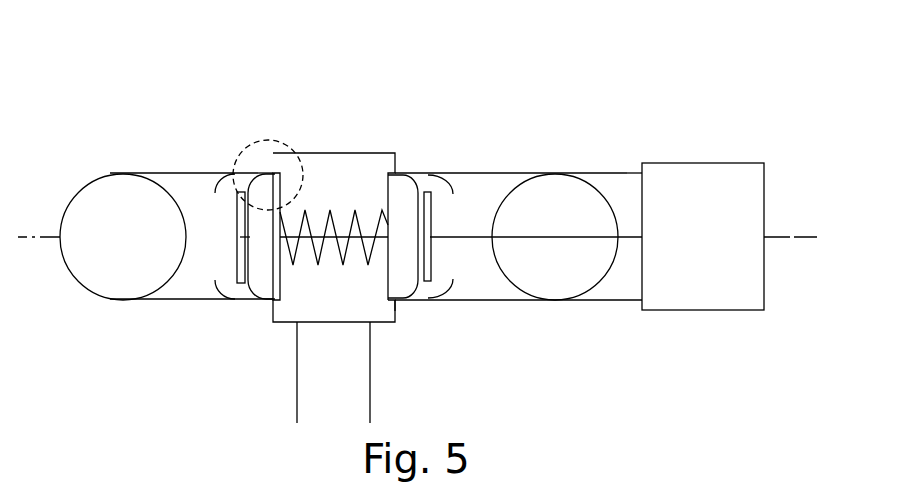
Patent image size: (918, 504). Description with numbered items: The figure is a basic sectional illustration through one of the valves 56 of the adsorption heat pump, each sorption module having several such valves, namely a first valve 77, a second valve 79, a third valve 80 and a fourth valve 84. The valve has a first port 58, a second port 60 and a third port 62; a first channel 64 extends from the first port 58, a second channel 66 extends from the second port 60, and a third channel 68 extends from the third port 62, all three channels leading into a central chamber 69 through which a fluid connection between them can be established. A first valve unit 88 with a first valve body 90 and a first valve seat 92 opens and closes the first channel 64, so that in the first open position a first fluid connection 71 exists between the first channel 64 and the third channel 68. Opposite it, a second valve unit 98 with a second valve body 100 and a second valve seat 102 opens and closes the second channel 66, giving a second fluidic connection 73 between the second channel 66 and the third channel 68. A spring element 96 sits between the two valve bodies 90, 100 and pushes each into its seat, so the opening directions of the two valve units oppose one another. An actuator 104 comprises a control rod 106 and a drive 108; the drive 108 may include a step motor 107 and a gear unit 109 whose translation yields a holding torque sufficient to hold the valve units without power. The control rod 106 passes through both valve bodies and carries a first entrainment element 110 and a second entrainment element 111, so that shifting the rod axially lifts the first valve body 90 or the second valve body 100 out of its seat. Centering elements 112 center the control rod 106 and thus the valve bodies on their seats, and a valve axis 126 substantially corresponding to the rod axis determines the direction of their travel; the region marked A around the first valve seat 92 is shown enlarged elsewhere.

The valve 56 is at (418, 240).
The first valve 77 is at (418, 240).
The second valve 79 is at (418, 240).
The third valve 80 is at (418, 240).
The fourth valve 84 is at (418, 240).
The first port 58 is at (112, 183).
The first channel 64 is at (177, 185).
The centering elements 112 is at (230, 180).
The first valve seat 92 is at (270, 172).
The detail A is at (268, 138).
The central chamber 69 is at (330, 167).
The spring element 96 is at (348, 210).
The second valve body 100 is at (400, 180).
The second entrainment element 111 is at (435, 225).
The second channel 66 is at (510, 180).
The second port 60 is at (560, 180).
The actuator 104 is at (627, 170).
The step motor 107 is at (716, 197).
The gear unit 109 is at (716, 197).
The drive 108 is at (703, 236).
The valve axis 126 is at (782, 236).
The first entrainment element 110 is at (238, 246).
The first valve body 90 is at (265, 285).
The first valve unit 88 is at (262, 323).
The first fluid connection 71 is at (282, 334).
The second valve seat 102 is at (393, 312).
The third port 62 is at (338, 400).
The third channel 68 is at (360, 398).
The second fluidic connection 73 is at (391, 334).
The second valve unit 98 is at (424, 317).
The control rod 106 is at (597, 238).